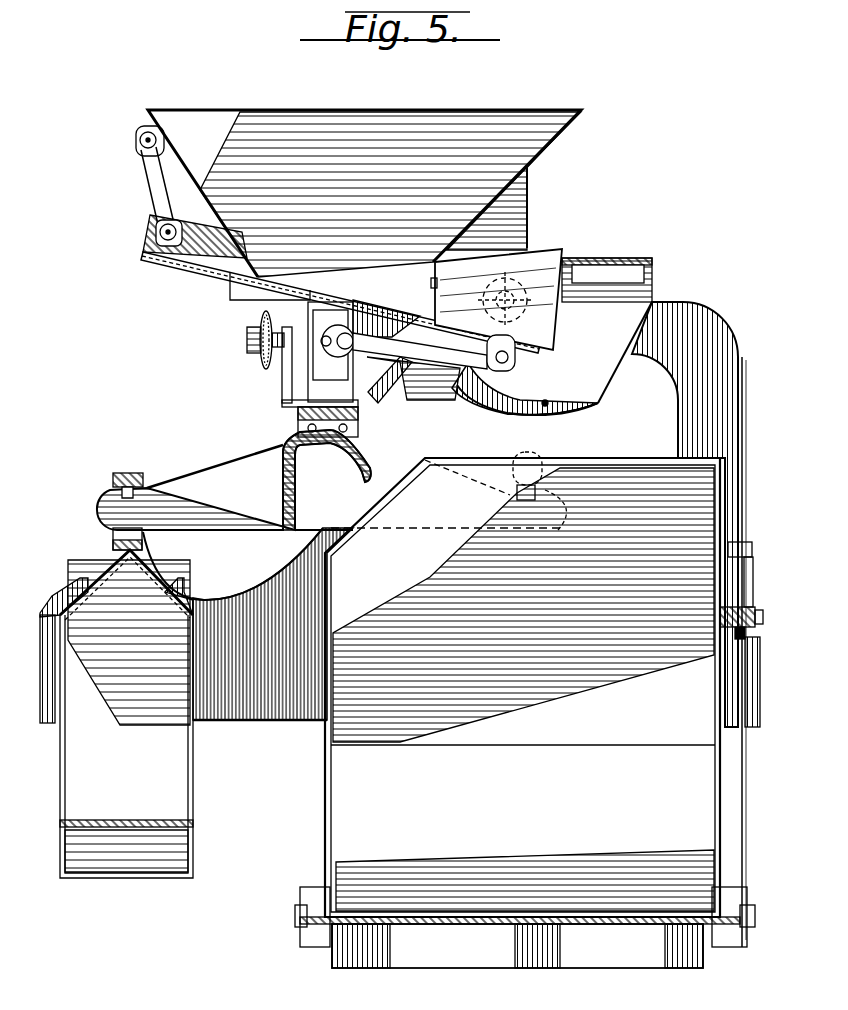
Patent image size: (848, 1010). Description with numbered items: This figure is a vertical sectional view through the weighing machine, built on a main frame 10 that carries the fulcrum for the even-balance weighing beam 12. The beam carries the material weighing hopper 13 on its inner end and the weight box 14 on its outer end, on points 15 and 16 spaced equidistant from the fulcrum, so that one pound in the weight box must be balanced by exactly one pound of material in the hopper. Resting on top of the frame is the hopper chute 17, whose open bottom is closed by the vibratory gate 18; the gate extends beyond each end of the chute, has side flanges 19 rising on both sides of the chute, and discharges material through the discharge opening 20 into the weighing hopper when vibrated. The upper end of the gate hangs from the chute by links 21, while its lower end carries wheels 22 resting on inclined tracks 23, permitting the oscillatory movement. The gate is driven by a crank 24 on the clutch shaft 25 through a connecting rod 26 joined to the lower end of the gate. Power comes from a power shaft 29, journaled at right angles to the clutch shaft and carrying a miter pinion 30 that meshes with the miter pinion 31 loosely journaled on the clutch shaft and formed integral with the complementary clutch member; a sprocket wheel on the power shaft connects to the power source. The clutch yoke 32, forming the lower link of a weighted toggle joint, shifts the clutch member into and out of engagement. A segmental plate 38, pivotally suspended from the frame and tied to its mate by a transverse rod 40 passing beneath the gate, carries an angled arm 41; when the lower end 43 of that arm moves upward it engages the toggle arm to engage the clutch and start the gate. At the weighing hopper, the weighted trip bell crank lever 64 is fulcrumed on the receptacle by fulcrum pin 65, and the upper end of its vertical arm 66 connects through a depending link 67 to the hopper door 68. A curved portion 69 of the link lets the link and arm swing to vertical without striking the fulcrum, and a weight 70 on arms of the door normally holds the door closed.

The main frame 10 is at (282, 718).
The weighing beam 12 is at (213, 466).
The material weighing hopper 13 is at (410, 780).
The weight box 14 is at (95, 748).
The point 15 is at (546, 491).
The point 16 is at (113, 484).
The hopper chute 17 is at (300, 167).
The vibratory gate 18 is at (198, 266).
The side flanges 19 is at (188, 226).
The discharge opening 20 is at (418, 262).
The links 21 is at (152, 183).
The wheels 22 is at (505, 290).
The inclined tracks 23 is at (482, 353).
The crank 24 is at (322, 352).
The clutch shaft 25 is at (326, 350).
The connecting rod 26 is at (372, 345).
The power shaft 29 is at (247, 340).
The miter pinion 30 is at (312, 322).
The miter pinion 31 is at (262, 318).
The clutch yoke 32 is at (358, 412).
The segmental plate 38 is at (563, 404).
The transverse rod 40 is at (533, 410).
The angled arm 41 is at (448, 378).
The lower end of angled arm 43 is at (402, 392).
The weighted trip bell crank lever 64 is at (742, 618).
The fulcrum pin 65 is at (763, 617).
The vertical arm 66 is at (752, 562).
The depending link 67 is at (748, 745).
The hopper door 68 is at (592, 918).
The curved portion 69 is at (747, 630).
The weight 70 is at (432, 949).